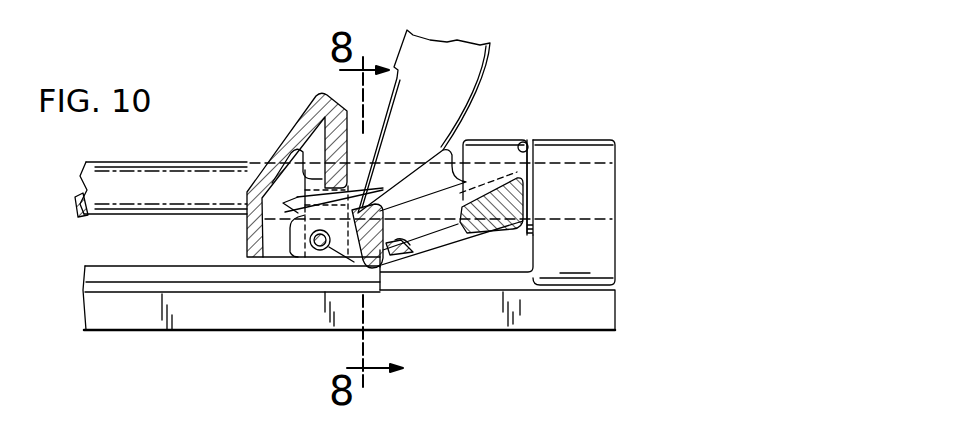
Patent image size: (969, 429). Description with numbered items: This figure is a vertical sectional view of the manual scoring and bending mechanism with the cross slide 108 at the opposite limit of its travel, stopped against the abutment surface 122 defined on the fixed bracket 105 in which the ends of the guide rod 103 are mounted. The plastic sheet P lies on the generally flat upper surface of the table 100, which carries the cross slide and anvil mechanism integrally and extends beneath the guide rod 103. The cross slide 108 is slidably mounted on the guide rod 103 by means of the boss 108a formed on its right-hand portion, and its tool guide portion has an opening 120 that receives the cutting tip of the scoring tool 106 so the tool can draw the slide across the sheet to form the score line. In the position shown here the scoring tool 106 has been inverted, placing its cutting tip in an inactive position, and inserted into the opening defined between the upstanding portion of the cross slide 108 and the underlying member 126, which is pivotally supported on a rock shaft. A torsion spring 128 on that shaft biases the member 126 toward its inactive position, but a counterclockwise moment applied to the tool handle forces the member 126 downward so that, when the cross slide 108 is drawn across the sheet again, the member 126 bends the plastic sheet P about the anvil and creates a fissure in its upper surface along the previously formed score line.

The table 100 is at (215, 292).
The plastic sheet P is at (107, 266).
The guide rod 103 is at (162, 162).
The fixed bracket 105 is at (615, 262).
The scoring tool 106 is at (470, 57).
The cross slide 108 is at (319, 94).
The boss 108a is at (496, 140).
The opening 120 is at (462, 226).
The abutment surface 122 is at (527, 143).
The underlying member 126 is at (443, 150).
The torsion spring 128 is at (303, 168).